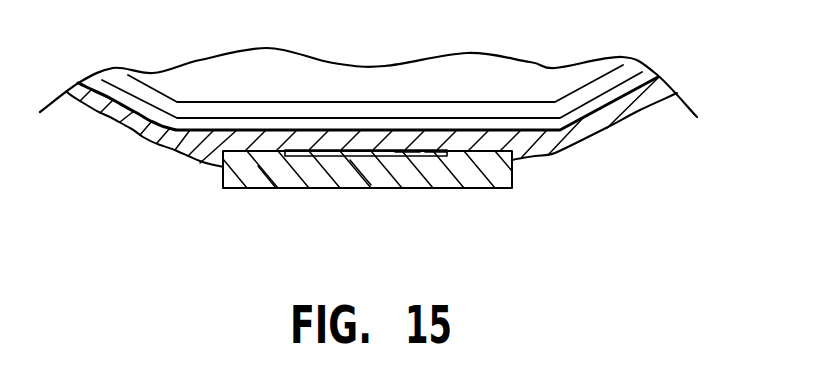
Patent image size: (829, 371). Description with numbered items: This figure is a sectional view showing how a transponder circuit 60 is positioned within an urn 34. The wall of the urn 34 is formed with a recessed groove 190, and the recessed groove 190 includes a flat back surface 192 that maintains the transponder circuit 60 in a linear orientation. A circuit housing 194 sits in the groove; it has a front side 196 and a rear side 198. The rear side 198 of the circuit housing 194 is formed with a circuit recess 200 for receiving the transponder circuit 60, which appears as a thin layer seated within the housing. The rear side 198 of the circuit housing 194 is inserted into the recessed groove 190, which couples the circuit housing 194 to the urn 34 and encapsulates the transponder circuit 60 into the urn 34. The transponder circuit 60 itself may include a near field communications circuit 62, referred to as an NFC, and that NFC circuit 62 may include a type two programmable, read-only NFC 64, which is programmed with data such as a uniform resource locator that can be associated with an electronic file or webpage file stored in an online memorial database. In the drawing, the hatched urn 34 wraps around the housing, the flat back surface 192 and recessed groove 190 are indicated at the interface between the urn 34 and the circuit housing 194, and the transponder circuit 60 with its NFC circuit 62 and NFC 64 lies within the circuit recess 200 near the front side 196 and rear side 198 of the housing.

The urn 34 is at (607, 128).
The rear side 198 is at (246, 150).
The flat back surface 192 is at (472, 148).
The recessed groove 190 is at (513, 157).
The front side 196 is at (315, 188).
The circuit recess 200 is at (381, 148).
The near field communications circuit 62 is at (266, 183).
The transponder circuit 60 is at (362, 172).
The type 2 programmable read only NFC 64 is at (403, 153).
The circuit housing 194 is at (435, 153).